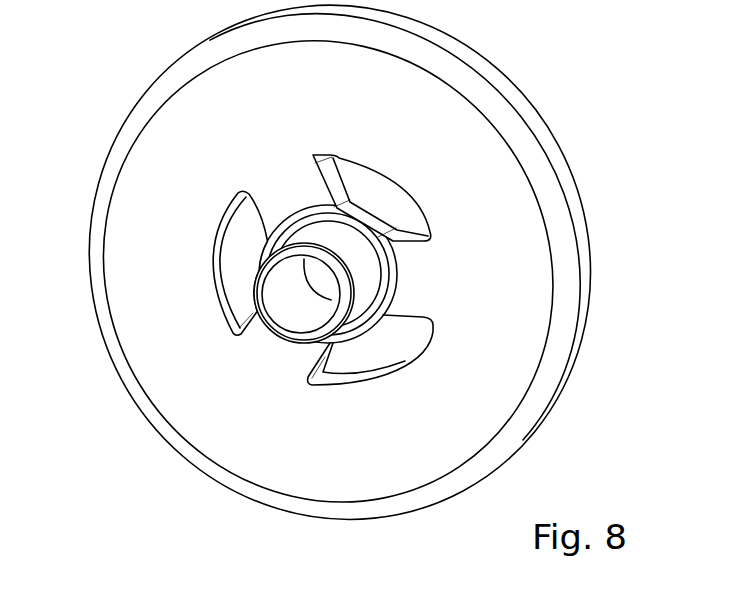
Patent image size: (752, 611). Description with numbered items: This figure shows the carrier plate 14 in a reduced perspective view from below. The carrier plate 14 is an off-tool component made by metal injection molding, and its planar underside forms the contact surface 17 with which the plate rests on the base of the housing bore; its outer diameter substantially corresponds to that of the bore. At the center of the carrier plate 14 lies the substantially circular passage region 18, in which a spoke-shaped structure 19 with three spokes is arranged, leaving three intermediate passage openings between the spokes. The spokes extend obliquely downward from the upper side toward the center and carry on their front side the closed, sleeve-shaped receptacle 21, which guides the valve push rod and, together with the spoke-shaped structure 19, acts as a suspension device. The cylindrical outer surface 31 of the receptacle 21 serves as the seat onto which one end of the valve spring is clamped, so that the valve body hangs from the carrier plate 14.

The carrier plate 14 is at (574, 96).
The contact surface 17 is at (173, 332).
The passage region 18 is at (322, 286).
The spoke-shaped structure 19 is at (410, 272).
The receptacle 21 is at (276, 350).
The cylindrical outer surface 31 is at (307, 231).